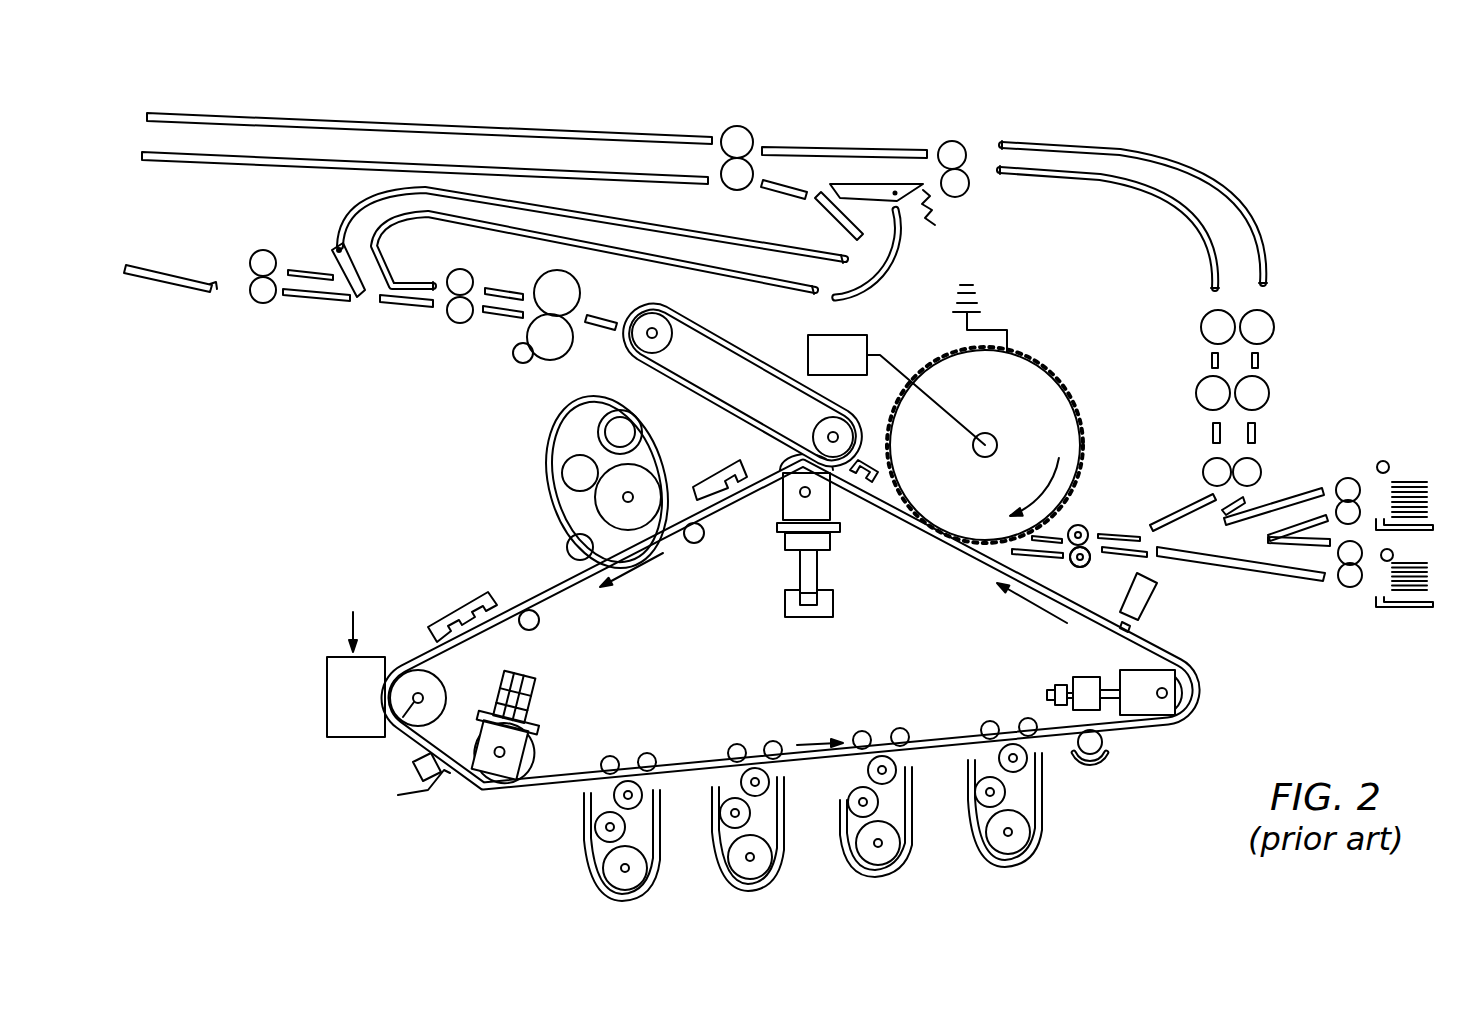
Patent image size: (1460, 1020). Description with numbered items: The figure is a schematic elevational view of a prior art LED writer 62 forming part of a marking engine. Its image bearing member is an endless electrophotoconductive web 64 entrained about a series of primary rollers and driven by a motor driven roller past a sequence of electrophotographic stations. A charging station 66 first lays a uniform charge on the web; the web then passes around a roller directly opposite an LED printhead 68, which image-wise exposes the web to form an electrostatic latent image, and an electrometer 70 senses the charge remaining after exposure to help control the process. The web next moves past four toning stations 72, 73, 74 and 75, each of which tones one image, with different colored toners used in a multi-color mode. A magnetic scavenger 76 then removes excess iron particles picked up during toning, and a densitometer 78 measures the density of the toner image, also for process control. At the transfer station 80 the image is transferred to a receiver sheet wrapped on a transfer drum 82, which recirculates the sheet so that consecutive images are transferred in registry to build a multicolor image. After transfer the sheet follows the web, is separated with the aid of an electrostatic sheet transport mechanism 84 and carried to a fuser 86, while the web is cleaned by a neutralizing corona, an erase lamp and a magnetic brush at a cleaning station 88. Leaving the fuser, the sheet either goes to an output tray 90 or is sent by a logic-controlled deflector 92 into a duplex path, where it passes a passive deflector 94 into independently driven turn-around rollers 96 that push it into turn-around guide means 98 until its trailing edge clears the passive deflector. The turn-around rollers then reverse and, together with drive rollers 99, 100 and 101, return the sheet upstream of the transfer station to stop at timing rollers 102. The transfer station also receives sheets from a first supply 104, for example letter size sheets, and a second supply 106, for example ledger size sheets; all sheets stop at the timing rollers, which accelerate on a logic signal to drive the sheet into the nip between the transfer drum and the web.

The LED writer 62 is at (1117, 135).
The electrophotoconductive web 64 is at (547, 790).
The charging station 66 is at (455, 604).
The LED printhead 68 is at (335, 655).
The electrometer 70 is at (445, 800).
The toning station 72 is at (662, 865).
The toning station 73 is at (787, 855).
The toning station 74 is at (918, 852).
The toning station 75 is at (1040, 855).
The magnetic scavenger 76 is at (1100, 760).
The densitometer 78 is at (1147, 600).
The transfer station 80 is at (1082, 519).
The transfer drum 82 is at (1063, 425).
The electrostatic sheet transport mechanism 84 is at (735, 357).
The fuser 86 is at (582, 292).
The cleaning station 88 is at (685, 465).
The output tray 90 is at (190, 292).
The deflector 92 is at (357, 298).
The passive deflector 94 is at (857, 185).
The turn-around rollers 96 is at (738, 135).
The turn-around guide means 98 is at (501, 142).
The drive rollers 99 is at (955, 147).
The drive rollers 100 is at (1270, 322).
The drive rollers 101 is at (1255, 462).
The timing rollers 102 is at (1088, 565).
The first supply 104 is at (1370, 466).
The second supply 106 is at (1366, 609).